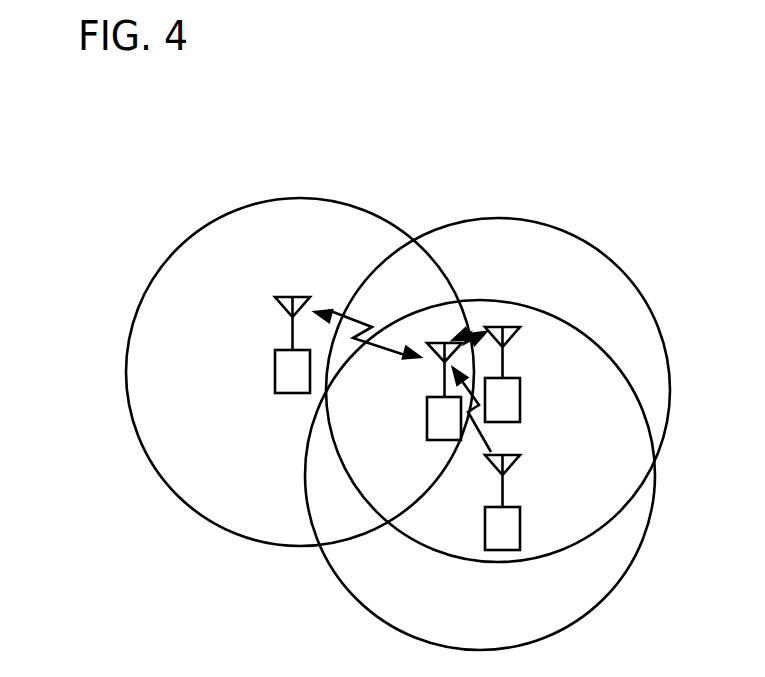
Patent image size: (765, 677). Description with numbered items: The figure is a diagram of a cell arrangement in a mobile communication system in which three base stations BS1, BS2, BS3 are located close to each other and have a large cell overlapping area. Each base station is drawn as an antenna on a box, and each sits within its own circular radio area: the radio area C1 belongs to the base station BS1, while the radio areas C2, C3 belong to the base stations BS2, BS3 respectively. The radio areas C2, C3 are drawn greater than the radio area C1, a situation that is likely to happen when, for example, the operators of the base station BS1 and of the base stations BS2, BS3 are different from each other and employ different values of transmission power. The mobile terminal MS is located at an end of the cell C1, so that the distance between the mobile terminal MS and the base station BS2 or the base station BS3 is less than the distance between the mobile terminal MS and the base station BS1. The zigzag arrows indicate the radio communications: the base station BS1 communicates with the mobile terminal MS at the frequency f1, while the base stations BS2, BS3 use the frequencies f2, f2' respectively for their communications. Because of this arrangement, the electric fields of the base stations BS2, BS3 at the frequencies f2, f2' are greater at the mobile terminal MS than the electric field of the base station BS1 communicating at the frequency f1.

The radio area of base station BS1 C1 is at (300, 198).
The radio area of base station BS2 C2 is at (490, 218).
The radio area of base station BS3 C3 is at (627, 578).
The base station BS1 is at (275, 372).
The base station BS2 is at (520, 398).
The base station BS3 is at (520, 532).
The mobile terminal MS is at (427, 416).
The frequency f1 is at (364, 311).
The frequency f2 is at (478, 299).
The frequency f2' is at (463, 443).